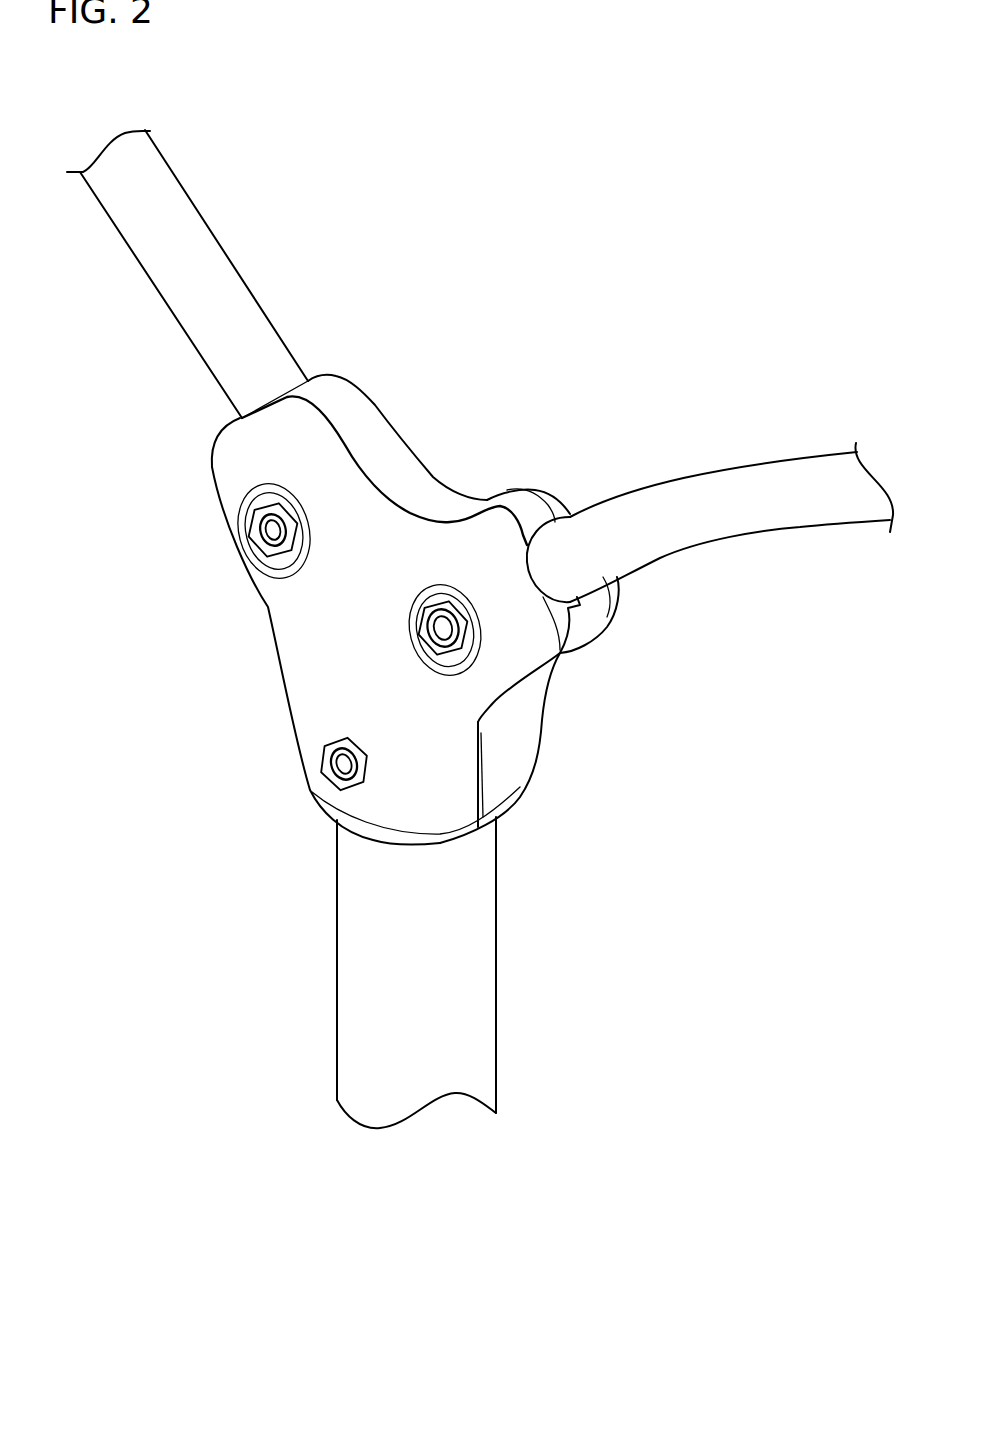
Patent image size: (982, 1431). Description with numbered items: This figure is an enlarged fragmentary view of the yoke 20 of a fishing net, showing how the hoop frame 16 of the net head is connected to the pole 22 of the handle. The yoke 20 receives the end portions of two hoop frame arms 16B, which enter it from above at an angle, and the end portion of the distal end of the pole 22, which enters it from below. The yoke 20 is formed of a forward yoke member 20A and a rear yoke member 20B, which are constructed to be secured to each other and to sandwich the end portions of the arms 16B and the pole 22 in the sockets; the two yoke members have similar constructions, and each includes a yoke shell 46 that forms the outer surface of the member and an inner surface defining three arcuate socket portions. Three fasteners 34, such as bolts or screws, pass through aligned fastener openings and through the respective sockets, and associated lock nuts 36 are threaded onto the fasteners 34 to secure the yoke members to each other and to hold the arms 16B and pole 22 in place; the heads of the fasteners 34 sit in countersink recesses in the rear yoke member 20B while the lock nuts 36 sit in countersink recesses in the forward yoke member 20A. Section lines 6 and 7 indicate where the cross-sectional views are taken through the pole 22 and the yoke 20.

The section line 6- 6 is at (440, 254).
The section line 7- 7 is at (409, 197).
The hoop frame 16 is at (745, 462).
The hoop frame arms 16B is at (153, 235).
The yoke 20 is at (435, 610).
The forward yoke member 20A is at (267, 635).
The rear yoke member 20B is at (547, 687).
The pole 22 is at (497, 967).
The fasteners 34 is at (262, 524).
The lock nuts 36 is at (262, 537).
The yoke shell 46 is at (340, 690).